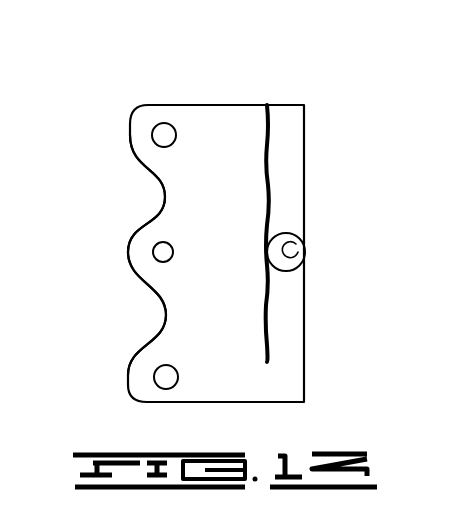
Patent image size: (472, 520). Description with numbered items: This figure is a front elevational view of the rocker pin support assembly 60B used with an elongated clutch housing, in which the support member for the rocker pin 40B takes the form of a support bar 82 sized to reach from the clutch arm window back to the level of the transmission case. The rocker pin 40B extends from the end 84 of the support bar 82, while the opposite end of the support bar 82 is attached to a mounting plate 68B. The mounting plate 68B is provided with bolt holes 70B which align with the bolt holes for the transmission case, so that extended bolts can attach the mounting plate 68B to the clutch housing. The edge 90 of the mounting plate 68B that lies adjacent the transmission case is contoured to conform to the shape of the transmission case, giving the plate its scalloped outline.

The rocker pin support assembly 60B is at (298, 96).
The support bar 82 is at (283, 170).
The end of the support bar 84 is at (287, 347).
The rocker pin 40B is at (296, 243).
The mounting plate 68B is at (180, 205).
The bolt holes 70B is at (160, 250).
The edge of the mounting plate 90 is at (140, 282).